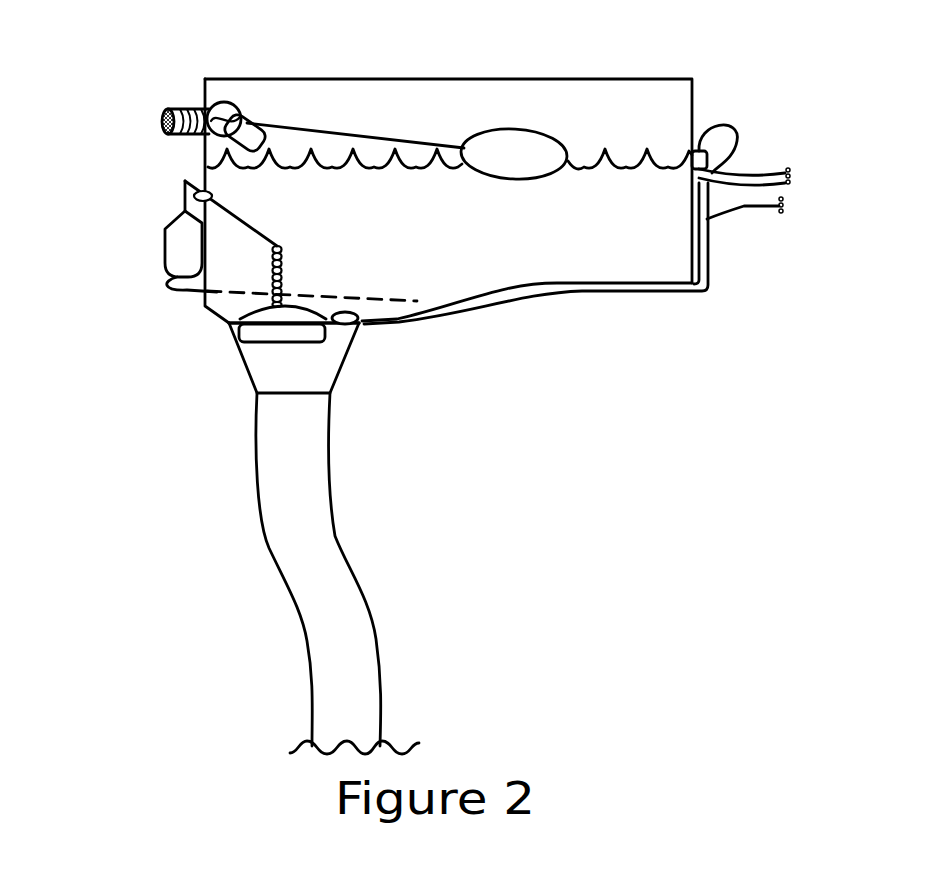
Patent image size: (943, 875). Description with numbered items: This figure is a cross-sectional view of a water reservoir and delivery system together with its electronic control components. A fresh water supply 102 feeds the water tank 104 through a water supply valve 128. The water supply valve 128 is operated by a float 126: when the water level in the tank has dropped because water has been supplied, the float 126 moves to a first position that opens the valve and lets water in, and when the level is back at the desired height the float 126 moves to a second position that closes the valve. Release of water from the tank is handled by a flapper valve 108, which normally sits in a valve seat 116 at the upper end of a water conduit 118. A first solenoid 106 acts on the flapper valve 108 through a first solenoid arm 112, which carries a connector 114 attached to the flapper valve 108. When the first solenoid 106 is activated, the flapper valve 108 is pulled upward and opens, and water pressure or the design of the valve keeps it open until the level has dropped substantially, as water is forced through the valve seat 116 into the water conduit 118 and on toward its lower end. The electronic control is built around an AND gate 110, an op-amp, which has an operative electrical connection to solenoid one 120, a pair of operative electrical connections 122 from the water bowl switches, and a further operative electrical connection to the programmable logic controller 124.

The fresh water supply 102 is at (154, 116).
The water tank 104 is at (397, 93).
The first solenoid 106 is at (177, 233).
The flapper valve 108 is at (317, 320).
The AND gate 110 is at (684, 150).
The first solenoid arm 112 is at (214, 200).
The connector 114 is at (276, 266).
The valve seat 116 is at (289, 336).
The water conduit 118 is at (297, 488).
The solenoid one 120 is at (627, 286).
The connection 122 is at (756, 166).
The programmable logic controller 124 is at (741, 200).
The float 126 is at (484, 130).
The water supply valve 128 is at (216, 97).